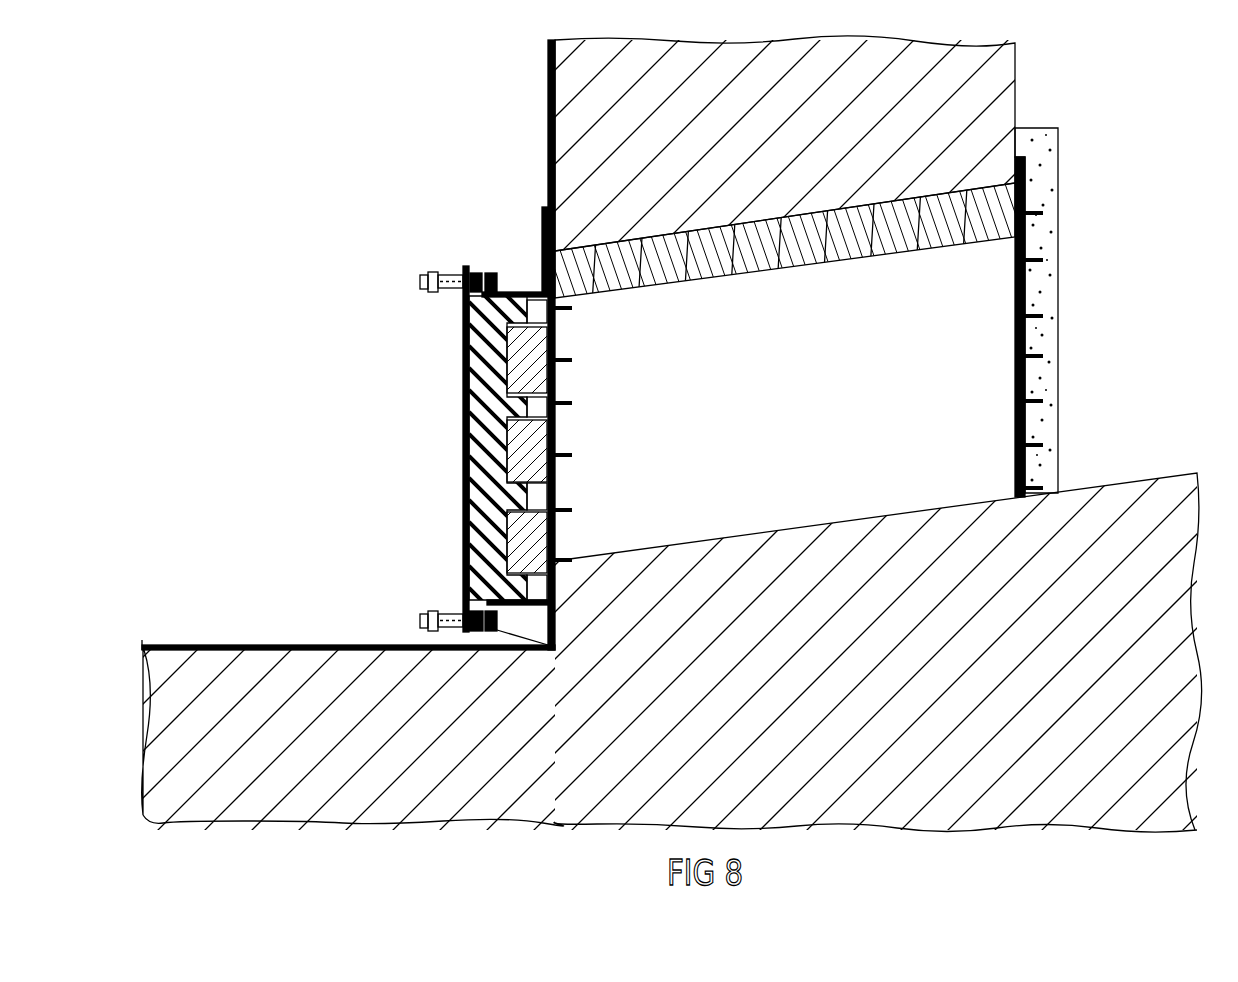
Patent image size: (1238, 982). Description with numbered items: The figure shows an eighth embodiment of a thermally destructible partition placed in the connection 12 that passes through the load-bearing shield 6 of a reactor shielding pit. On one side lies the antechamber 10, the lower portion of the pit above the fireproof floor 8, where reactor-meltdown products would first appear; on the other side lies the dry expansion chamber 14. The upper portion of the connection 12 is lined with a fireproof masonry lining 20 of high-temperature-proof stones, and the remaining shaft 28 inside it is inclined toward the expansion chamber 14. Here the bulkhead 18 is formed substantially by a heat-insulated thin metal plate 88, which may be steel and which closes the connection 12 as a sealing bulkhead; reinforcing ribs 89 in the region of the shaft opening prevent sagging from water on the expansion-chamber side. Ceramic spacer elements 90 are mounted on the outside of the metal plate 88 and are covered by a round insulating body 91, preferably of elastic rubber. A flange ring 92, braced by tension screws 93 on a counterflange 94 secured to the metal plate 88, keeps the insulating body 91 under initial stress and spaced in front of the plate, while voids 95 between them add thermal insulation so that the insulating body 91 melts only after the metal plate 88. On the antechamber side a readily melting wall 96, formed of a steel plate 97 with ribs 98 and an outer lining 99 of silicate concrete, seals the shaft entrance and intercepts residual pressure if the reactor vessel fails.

The load-bearing shield 6 is at (1000, 74).
The floor 8 is at (1118, 530).
The antechamber 10 is at (619, 610).
The connection 12 is at (603, 246).
The expansion chamber 14 is at (289, 463).
The bulkhead 18 is at (505, 410).
The fireproof masonry lining 20 is at (873, 258).
The shaft 28 is at (700, 337).
The metal plate 88 is at (548, 105).
The reinforcing ribs 89 is at (562, 397).
The spacer elements 90 is at (545, 440).
The insulating body 91 is at (468, 410).
The flange ring 92 is at (462, 299).
The tension screws 93 is at (460, 248).
The counterflange 94 is at (518, 287).
The voids 95 is at (545, 418).
The readily melting wall 96 is at (1042, 312).
The steel plate 97 is at (1015, 390).
The ribs 98 is at (1017, 340).
The lining of silicate concrete 99 is at (1050, 185).